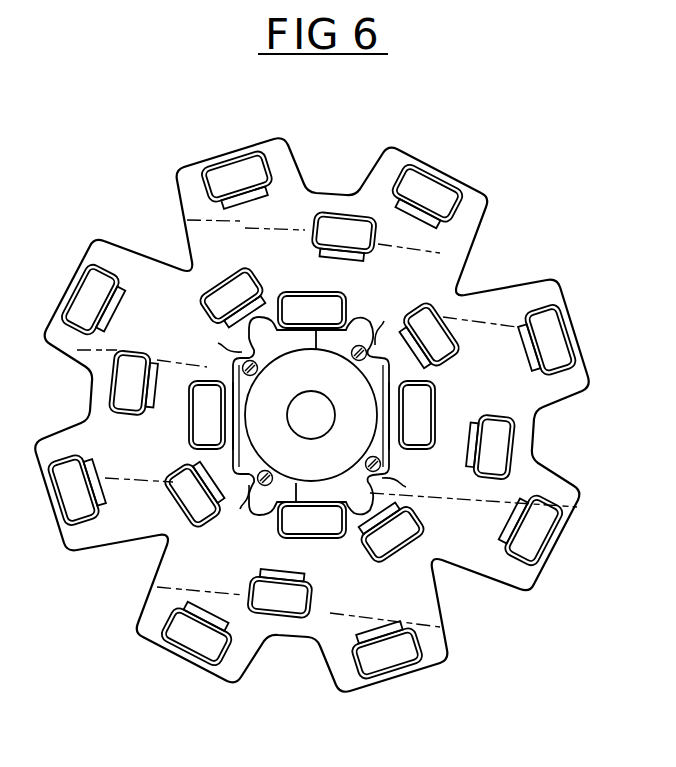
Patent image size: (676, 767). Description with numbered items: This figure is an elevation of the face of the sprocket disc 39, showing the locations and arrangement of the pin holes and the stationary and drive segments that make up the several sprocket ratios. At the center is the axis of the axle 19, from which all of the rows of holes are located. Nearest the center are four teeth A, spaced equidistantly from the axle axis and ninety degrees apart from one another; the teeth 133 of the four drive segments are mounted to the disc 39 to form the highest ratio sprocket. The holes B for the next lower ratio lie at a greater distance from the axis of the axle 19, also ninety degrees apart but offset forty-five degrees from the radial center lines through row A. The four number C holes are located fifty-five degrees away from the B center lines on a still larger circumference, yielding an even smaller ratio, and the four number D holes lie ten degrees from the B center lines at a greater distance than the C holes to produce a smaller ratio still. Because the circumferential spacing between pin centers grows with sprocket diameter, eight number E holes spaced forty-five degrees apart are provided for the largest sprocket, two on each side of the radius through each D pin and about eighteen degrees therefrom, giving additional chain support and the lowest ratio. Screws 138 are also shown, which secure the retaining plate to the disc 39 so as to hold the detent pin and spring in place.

The disc 39 is at (488, 216).
The number E holes E is at (213, 177).
The number D holes D is at (377, 247).
The number C holes C is at (207, 307).
The holes B is at (337, 303).
The teeth A is at (243, 345).
The axle 19 is at (311, 392).
The screws 138 is at (364, 462).
The teeth of the drive segments 133 is at (260, 518).